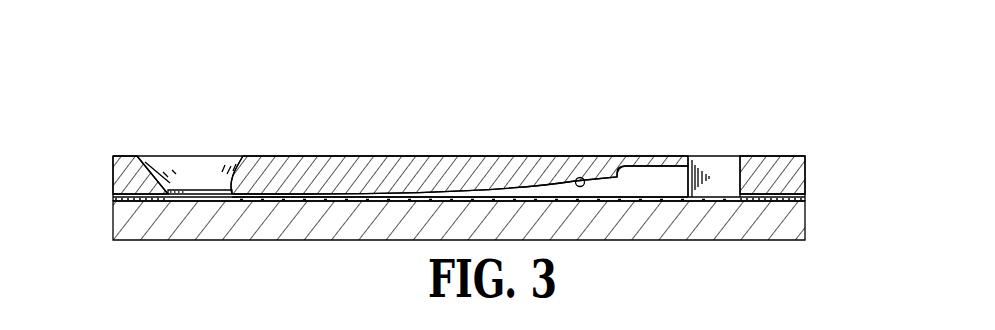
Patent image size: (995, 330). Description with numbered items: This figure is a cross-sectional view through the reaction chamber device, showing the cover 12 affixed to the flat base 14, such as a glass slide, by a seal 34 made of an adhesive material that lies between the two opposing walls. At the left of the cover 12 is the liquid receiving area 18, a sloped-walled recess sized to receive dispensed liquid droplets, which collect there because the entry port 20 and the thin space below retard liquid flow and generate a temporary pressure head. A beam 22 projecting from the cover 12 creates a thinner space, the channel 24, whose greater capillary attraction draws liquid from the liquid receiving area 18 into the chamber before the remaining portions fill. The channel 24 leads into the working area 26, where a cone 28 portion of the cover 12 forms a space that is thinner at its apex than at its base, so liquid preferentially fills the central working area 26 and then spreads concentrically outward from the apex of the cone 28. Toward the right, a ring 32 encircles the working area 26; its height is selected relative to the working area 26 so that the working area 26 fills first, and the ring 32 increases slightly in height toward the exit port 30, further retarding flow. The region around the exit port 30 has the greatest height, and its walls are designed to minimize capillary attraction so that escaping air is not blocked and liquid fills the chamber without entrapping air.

The cover 12 is at (814, 179).
The base 14 is at (805, 238).
The liquid receiving area 18 is at (200, 167).
The entry port 20 is at (210, 190).
The beam 22 is at (303, 193).
The channel 24 is at (283, 195).
The working area 26 is at (550, 193).
The cone 28 is at (580, 177).
The exit port 30 is at (722, 170).
The ring 32 is at (667, 180).
The seal 34 is at (113, 199).